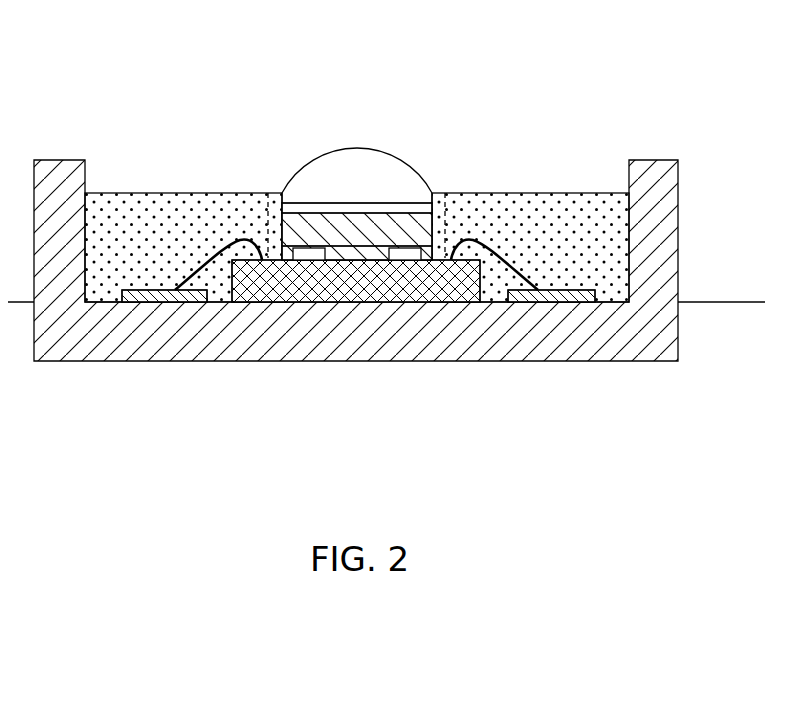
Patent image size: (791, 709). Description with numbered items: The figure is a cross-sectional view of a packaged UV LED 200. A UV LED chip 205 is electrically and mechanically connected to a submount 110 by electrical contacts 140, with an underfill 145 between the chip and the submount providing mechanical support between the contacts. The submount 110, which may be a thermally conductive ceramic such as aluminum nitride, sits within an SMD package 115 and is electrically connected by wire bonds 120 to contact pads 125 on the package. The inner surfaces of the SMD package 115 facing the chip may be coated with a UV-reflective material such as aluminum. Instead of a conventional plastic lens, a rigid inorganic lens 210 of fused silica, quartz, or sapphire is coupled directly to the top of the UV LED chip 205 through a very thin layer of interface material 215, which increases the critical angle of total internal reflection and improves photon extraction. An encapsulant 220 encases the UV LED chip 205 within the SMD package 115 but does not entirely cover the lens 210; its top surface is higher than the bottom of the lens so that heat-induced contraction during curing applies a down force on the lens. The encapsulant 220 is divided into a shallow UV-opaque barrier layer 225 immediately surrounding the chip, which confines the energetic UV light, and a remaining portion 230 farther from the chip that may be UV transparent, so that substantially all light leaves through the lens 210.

The packaged UV LED 200 is at (130, 82).
The SMD package 115 is at (383, 348).
The submount 110 is at (468, 290).
The wire bonds 120 is at (197, 270).
The contact pads 125 is at (126, 299).
The electrical contacts 140 is at (291, 257).
The underfill 145 is at (347, 250).
The UV LED chip 205 is at (298, 228).
The interface material 215 is at (338, 206).
The inorganic lens 210 is at (398, 167).
The encapsulant 220 is at (133, 205).
The remaining portion of the encapsulant 230 is at (200, 217).
The barrier layer 225 is at (268, 190).